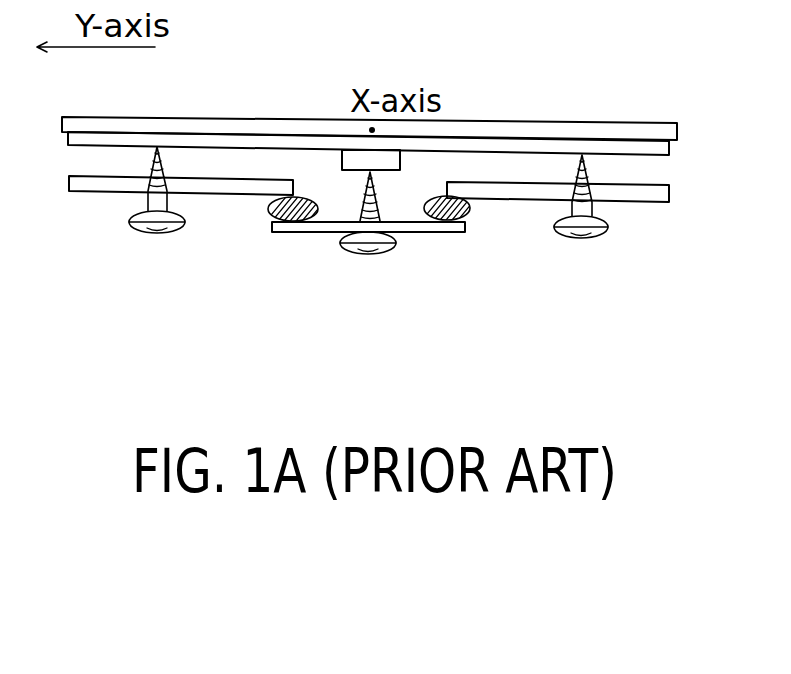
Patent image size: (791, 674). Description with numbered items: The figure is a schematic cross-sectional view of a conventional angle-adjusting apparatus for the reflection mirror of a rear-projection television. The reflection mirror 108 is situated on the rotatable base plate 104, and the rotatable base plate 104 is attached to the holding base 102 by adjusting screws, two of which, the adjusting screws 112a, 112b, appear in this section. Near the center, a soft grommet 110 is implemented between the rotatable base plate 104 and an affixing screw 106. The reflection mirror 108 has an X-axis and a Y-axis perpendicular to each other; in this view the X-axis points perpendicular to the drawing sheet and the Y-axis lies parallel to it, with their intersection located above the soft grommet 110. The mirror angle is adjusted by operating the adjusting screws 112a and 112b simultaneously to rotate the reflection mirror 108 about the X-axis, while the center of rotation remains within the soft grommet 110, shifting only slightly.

The holding base 102 is at (635, 193).
The rotatable base plate 104 is at (660, 148).
The affixing screw 106 is at (380, 242).
The reflection mirror 108 is at (571, 132).
The soft grommet 110 is at (265, 215).
The adjusting screw 112a is at (593, 222).
The adjusting screw 112b is at (140, 217).